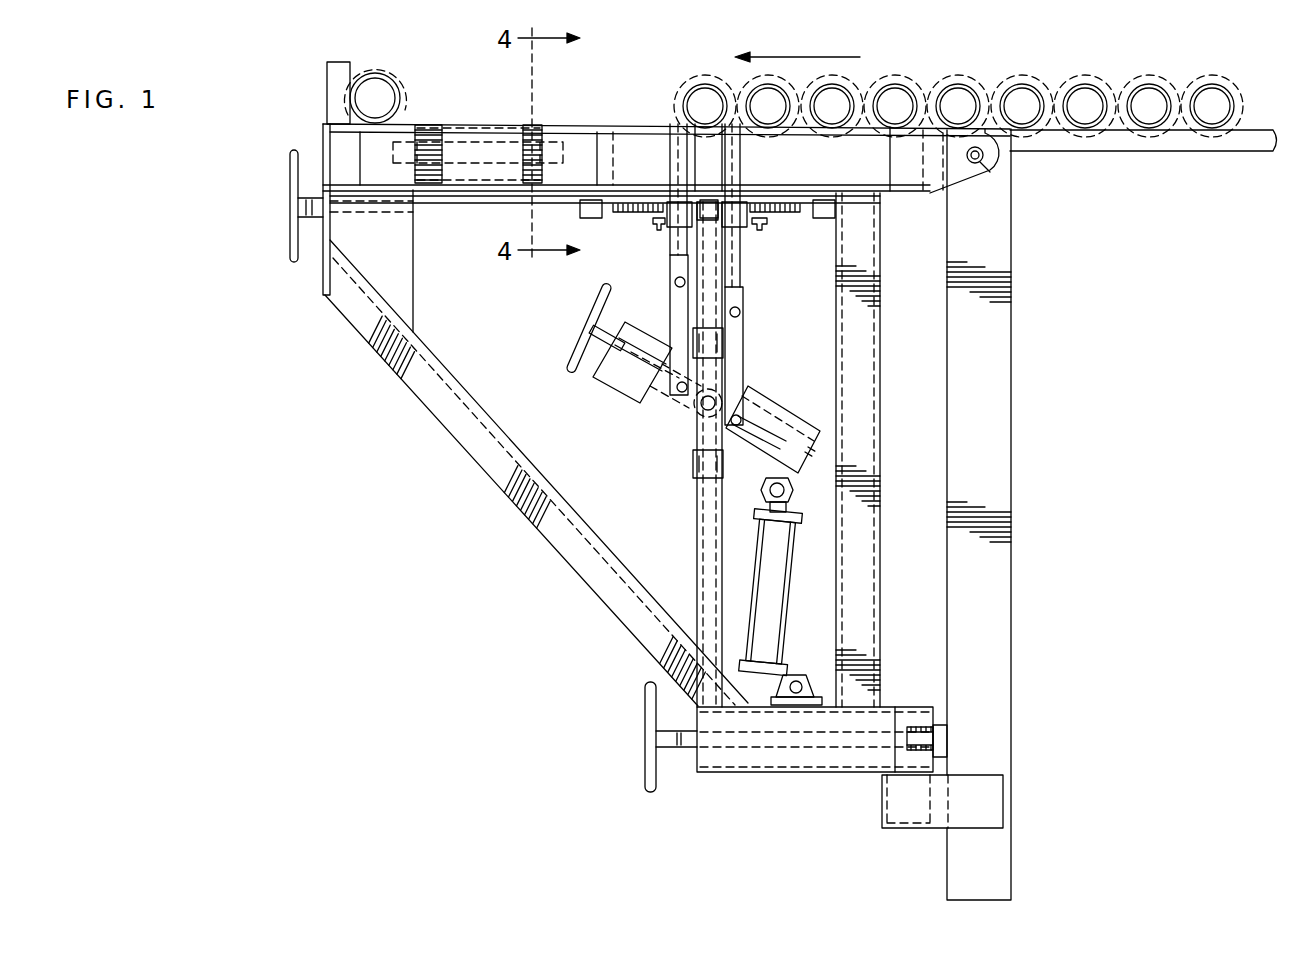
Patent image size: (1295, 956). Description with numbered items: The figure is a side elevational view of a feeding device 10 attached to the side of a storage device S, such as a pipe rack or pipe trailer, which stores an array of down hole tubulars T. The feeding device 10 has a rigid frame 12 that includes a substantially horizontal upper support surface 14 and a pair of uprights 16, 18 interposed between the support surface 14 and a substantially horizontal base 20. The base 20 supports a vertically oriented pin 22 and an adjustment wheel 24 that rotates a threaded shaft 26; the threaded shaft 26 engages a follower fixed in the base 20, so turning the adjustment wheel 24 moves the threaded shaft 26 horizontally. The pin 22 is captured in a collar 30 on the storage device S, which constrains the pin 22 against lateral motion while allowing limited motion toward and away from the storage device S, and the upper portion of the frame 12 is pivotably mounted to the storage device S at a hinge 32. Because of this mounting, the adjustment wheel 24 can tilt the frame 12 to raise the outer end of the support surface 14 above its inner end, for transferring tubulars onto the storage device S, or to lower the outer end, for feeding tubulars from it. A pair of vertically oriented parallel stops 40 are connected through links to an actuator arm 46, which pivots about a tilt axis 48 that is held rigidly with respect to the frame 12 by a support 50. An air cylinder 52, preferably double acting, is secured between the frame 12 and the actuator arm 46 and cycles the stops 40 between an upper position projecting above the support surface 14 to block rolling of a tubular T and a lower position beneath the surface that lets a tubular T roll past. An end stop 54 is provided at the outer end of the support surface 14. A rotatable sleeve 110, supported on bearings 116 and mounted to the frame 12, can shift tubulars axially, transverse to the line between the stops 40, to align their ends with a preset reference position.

The feeding device 10 is at (461, 473).
The rigid frame 12 is at (536, 473).
The upper support surface 14 is at (582, 124).
The upright 16 is at (470, 412).
The upright 18 is at (842, 348).
The base 20 is at (763, 770).
The pin 22 is at (907, 803).
The adjustment wheel 24 is at (650, 792).
The threaded shaft 26 is at (922, 730).
The collar 30 is at (937, 830).
The hinge 32 is at (988, 162).
The stop 40 is at (675, 175).
The actuator arm 46 is at (616, 410).
The tilt axis 48 is at (690, 430).
The support 50 is at (697, 535).
The air cylinder 52 is at (787, 618).
The end stop 54 is at (328, 90).
The rotatable sleeve 110 is at (490, 114).
The bearings 116 is at (545, 129).
The storage device S is at (1030, 340).
The down hole tubulars T is at (1031, 86).